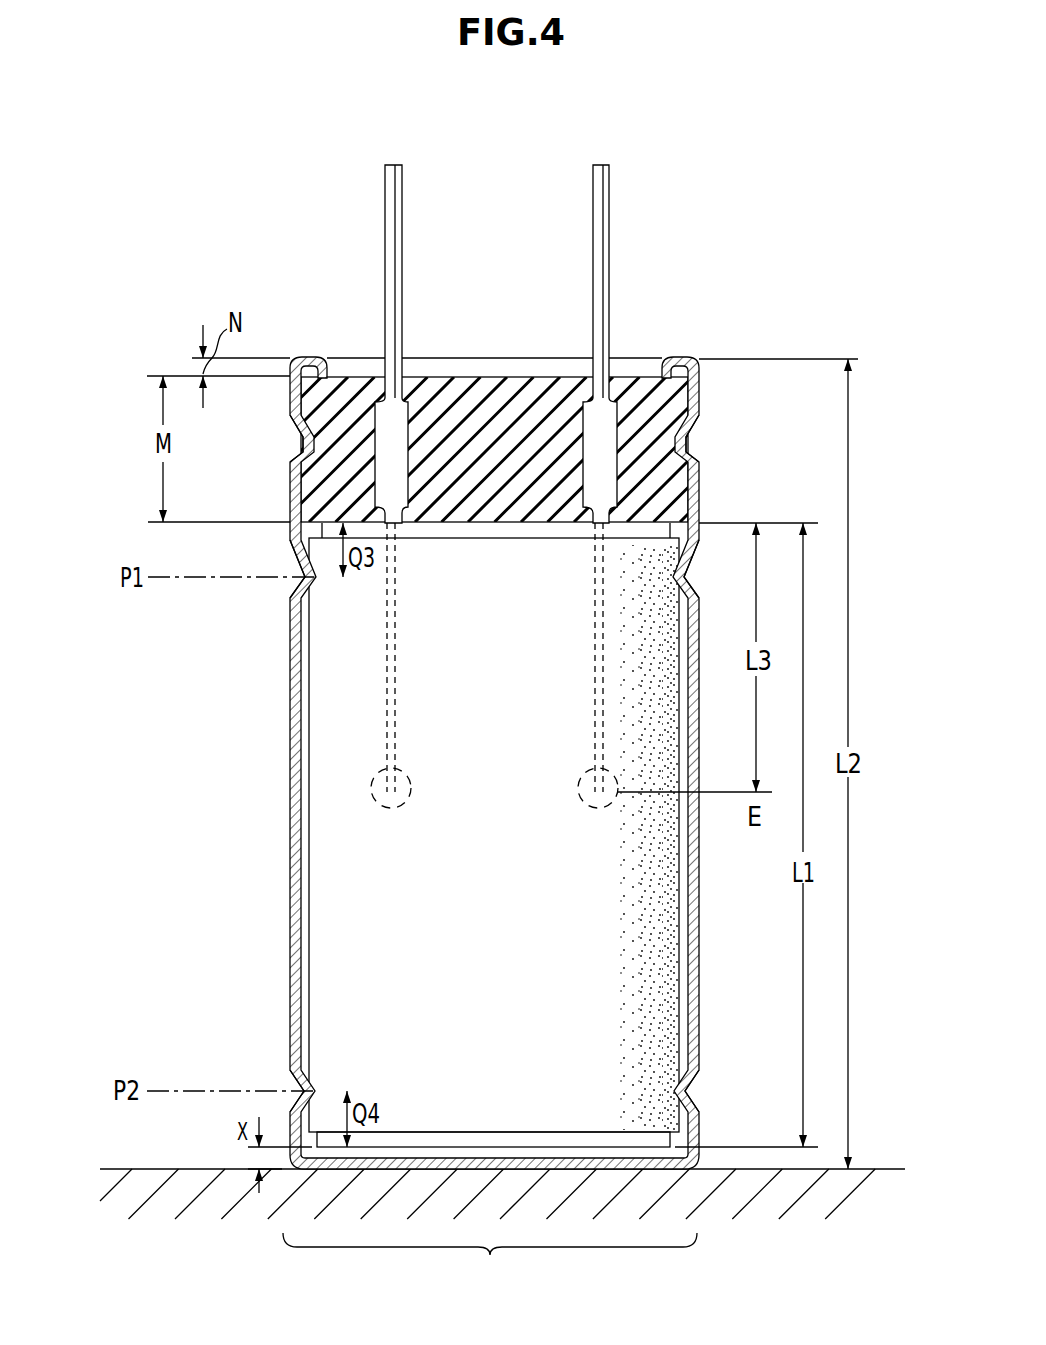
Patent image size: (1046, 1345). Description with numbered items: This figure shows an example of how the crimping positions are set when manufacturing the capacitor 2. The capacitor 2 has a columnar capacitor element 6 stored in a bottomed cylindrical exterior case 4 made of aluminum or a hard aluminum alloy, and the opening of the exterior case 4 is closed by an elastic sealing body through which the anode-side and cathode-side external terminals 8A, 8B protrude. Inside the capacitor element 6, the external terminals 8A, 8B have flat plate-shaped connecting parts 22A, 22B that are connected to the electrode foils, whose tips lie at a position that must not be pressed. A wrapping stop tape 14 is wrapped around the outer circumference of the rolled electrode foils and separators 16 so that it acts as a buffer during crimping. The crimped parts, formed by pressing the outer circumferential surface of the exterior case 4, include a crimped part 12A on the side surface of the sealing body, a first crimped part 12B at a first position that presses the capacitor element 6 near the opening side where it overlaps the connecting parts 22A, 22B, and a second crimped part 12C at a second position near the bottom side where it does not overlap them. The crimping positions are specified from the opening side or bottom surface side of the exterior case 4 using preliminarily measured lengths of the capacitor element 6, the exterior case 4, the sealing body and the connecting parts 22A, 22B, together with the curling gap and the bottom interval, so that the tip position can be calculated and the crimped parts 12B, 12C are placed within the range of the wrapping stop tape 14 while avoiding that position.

The capacitor 2 is at (490, 1262).
The exterior case 4 is at (290, 923).
The capacitor element 6 is at (679, 1013).
The external terminal 8A is at (610, 235).
The external terminal 8B is at (402, 235).
The crimped part 12A is at (300, 428).
The crimped part 12B is at (302, 583).
The crimped part 12C is at (297, 1085).
The wrapping stop tape 14 is at (658, 898).
The separator 16 is at (652, 1138).
The connecting part 22A is at (603, 587).
The connecting part 22B is at (387, 727).